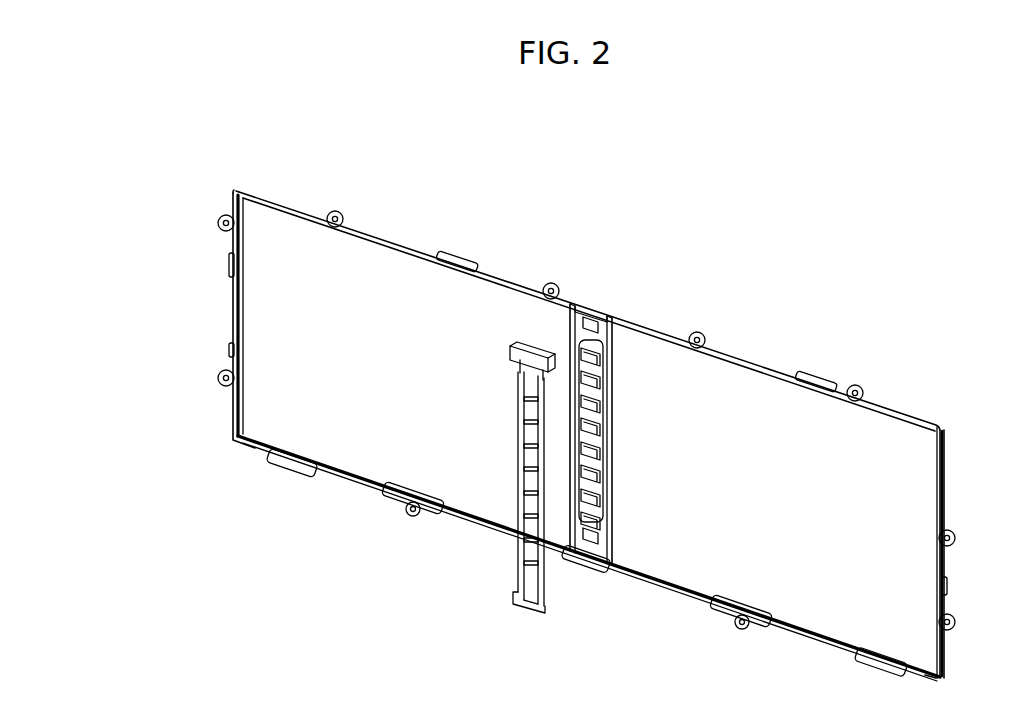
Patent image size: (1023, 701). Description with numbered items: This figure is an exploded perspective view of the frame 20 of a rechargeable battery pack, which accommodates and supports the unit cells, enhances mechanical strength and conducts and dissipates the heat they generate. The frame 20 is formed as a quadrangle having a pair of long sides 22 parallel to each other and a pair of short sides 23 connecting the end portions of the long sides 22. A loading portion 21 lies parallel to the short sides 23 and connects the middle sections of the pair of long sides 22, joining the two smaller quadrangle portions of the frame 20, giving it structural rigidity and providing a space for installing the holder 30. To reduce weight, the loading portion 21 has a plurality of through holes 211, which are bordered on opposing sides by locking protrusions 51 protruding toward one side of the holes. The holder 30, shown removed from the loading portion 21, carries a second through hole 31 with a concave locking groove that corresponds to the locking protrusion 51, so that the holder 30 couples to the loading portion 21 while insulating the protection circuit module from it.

The frame 20 is at (909, 406).
The loading portion 21 is at (565, 358).
The through holes 211 is at (600, 462).
The long sides 22 is at (716, 352).
The short sides 23 is at (232, 308).
The holder 30 is at (527, 333).
The second through hole 31 is at (523, 460).
The locking protrusions 51 is at (588, 490).